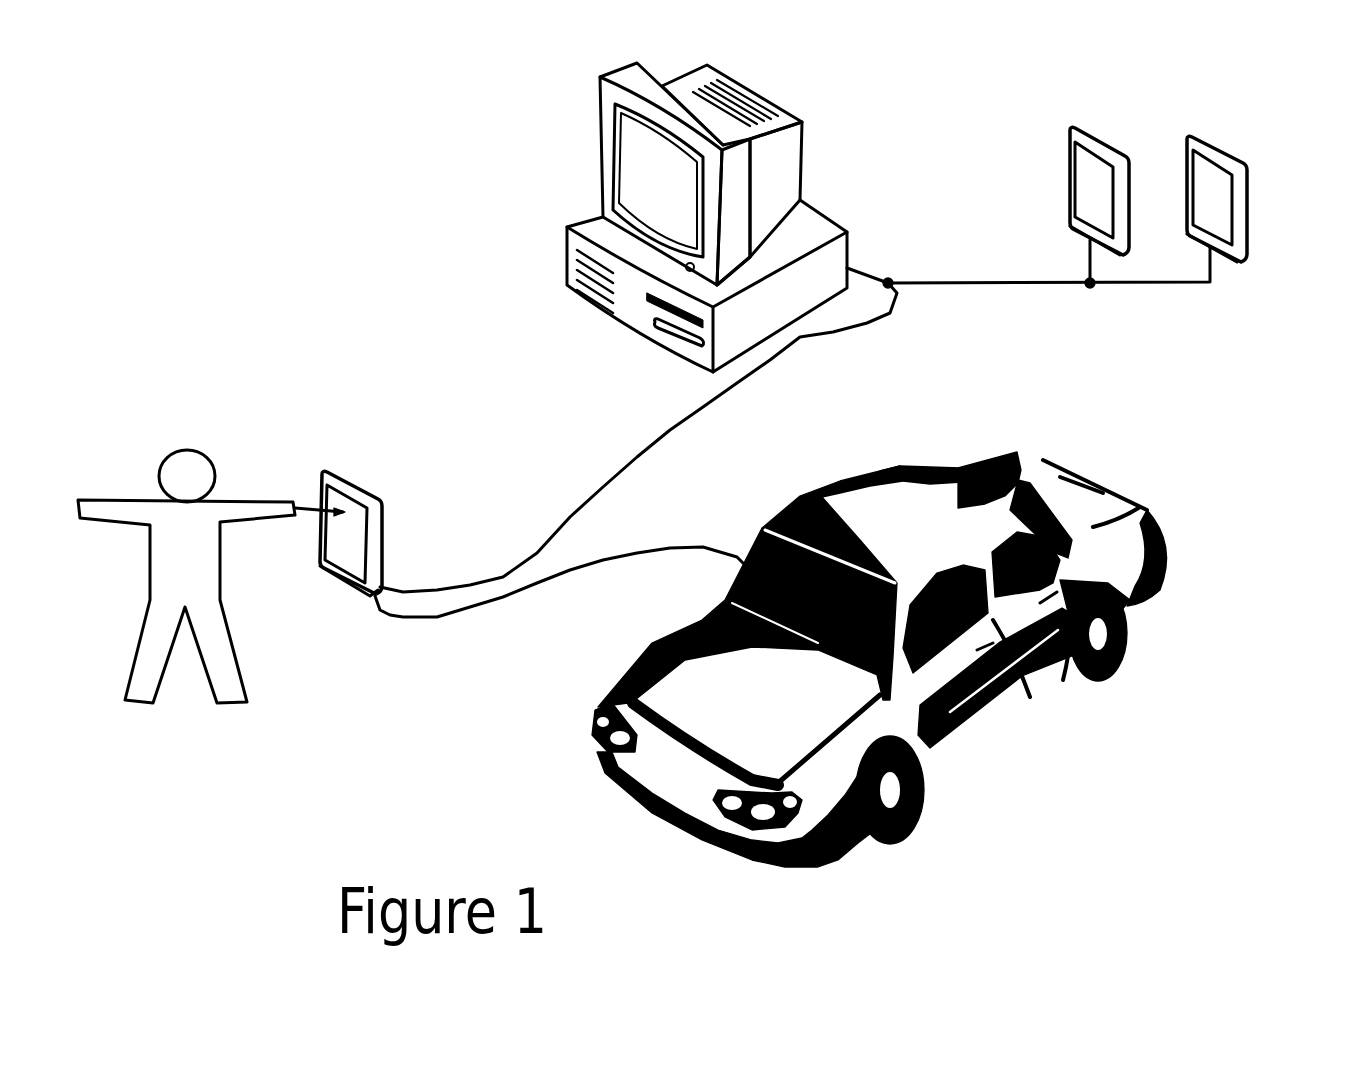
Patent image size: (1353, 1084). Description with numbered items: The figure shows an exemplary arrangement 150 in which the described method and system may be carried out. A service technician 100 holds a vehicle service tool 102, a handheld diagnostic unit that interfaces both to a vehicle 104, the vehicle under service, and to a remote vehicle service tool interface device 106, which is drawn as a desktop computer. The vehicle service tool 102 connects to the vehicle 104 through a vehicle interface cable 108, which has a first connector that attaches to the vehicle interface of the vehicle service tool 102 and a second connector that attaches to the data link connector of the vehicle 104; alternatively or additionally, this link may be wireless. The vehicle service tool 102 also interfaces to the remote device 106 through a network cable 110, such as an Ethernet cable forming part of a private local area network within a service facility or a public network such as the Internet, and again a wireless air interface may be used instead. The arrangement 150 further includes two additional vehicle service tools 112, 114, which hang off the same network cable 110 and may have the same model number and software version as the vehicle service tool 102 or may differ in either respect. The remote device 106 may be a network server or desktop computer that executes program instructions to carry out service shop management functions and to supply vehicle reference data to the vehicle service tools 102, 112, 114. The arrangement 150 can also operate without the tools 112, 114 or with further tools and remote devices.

The service technician 100 is at (243, 667).
The vehicle service tool 102 is at (382, 532).
The vehicle 104 is at (1163, 535).
The remote vehicle service tool interface device 106 is at (848, 233).
The vehicle interface cable 108 is at (592, 570).
The network cable 110 is at (897, 297).
The vehicle service tool 112 is at (1070, 213).
The vehicle service tool 114 is at (1247, 243).
The arrangement 150 is at (352, 178).